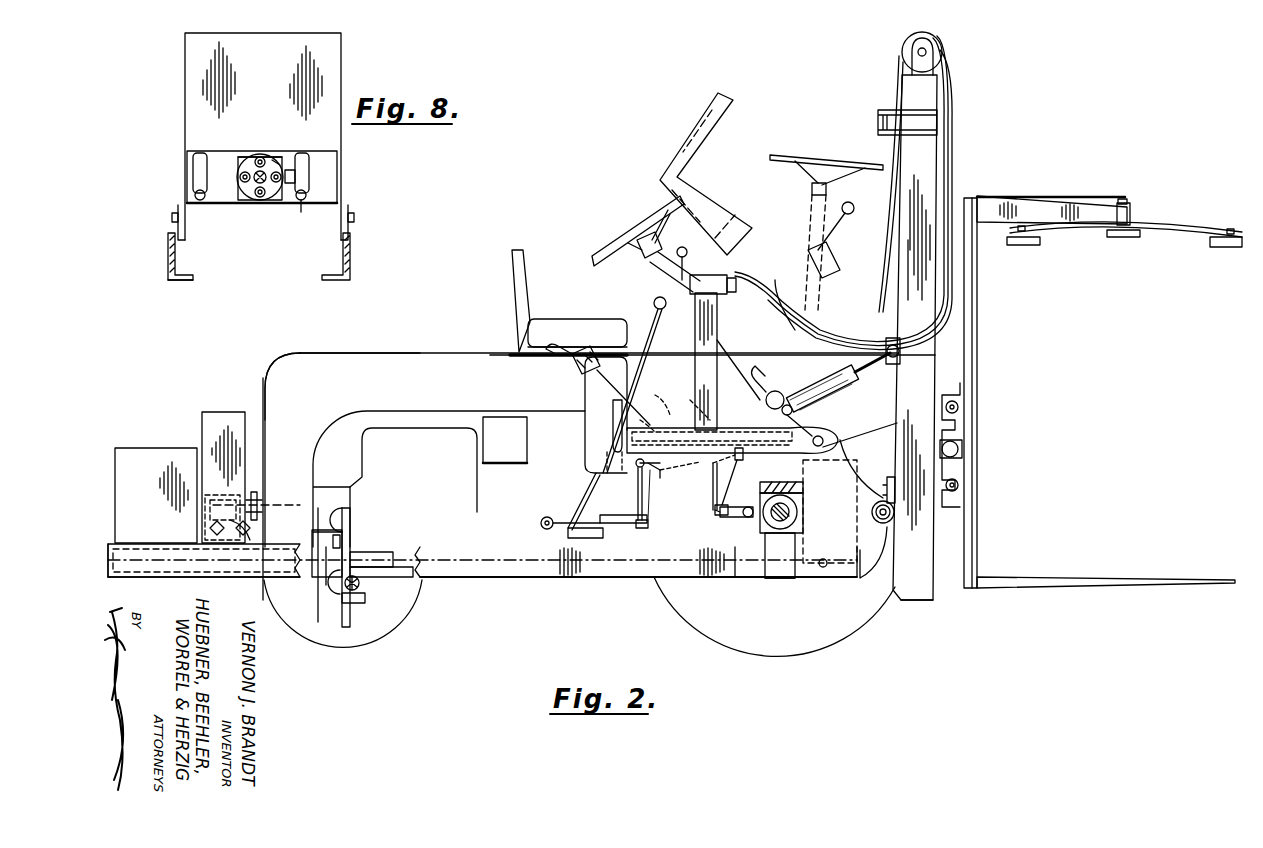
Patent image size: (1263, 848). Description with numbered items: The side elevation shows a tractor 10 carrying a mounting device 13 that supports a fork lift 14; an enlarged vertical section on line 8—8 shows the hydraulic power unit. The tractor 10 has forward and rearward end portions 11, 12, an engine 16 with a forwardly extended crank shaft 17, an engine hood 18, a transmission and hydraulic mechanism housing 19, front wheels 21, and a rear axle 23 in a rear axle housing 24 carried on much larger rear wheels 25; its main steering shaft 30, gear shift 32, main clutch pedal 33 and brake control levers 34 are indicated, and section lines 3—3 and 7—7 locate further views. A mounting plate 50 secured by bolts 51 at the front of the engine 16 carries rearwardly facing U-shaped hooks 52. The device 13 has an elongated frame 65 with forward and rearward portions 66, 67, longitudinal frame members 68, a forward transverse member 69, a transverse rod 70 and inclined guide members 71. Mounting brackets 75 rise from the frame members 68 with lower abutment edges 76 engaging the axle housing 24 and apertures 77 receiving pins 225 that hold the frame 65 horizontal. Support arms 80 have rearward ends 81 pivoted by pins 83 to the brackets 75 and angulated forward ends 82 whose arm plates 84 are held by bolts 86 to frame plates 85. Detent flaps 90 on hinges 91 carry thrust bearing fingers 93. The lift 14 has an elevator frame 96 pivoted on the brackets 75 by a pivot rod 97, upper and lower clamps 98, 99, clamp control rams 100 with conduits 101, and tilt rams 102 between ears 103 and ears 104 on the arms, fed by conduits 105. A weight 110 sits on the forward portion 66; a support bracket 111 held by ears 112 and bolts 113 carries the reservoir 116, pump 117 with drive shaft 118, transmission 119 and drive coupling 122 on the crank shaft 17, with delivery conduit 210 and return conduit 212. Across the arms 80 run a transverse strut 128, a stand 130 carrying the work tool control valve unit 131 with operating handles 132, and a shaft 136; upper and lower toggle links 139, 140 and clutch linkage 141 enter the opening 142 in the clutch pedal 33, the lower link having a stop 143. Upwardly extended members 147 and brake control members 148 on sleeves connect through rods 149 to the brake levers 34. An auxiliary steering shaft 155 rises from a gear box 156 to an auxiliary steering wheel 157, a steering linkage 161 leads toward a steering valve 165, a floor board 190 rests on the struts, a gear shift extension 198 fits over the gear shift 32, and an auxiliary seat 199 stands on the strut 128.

In FIG. 8, the reservoir 116 is at (282, 66).
In FIG. 2, the reservoir 116 is at (218, 412).
In FIG. 8, the support bracket 111 is at (342, 195).
In FIG. 8, the crank shaft 17 is at (262, 155).
In FIG. 2, the crank shaft 17 is at (272, 508).
In FIG. 8, the drive coupling 122 is at (246, 160).
In FIG. 8, the transmission 119 is at (275, 160).
In FIG. 8, the drive shaft 118 is at (291, 170).
In FIG. 8, the return conduit 212 is at (202, 200).
In FIG. 8, the delivery conduit 210 is at (302, 200).
In FIG. 8, the pump 117 is at (308, 185).
In FIG. 8, the ears 112 is at (180, 212).
In FIG. 2, the ears 112 is at (232, 542).
In FIG. 8, the bolts 113 is at (172, 217).
In FIG. 2, the bolts 113 is at (210, 530).
In FIG. 8, the longitudinal frame members 68 is at (168, 255).
In FIG. 2, the longitudinal frame members 68 is at (515, 578).
In FIG. 8, the frame 65 is at (166, 282).
In FIG. 2, the frame 65 is at (238, 598).
In FIG. 2, the engine hood 18 is at (420, 353).
In FIG. 2, the tractor 10 is at (400, 350).
In FIG. 2, the forward end portion 11 is at (290, 360).
In FIG. 2, the engine 16 is at (430, 462).
In FIG. 2, the section line 3— 3 is at (511, 335).
In FIG. 2, the main clutch pedal 33 is at (642, 562).
In FIG. 2, the transmission and hydraulic mechanism housing 19 is at (660, 540).
In FIG. 2, the forward portion 66 is at (150, 562).
In FIG. 2, the forward transverse member 69 is at (108, 577).
In FIG. 2, the weight 110 is at (133, 448).
In FIG. 2, the bolts 51 is at (344, 510).
In FIG. 2, the mounting plate 50 is at (338, 597).
In FIG. 2, the U-shaped hooks 52 is at (357, 605).
In FIG. 2, the transverse rod 70 is at (359, 586).
In FIG. 2, the section line 7— 7 is at (292, 520).
In FIG. 2, the guide members 71 is at (313, 575).
In FIG. 2, the section line 8— 8 is at (300, 405).
In FIG. 2, the front wheels 21 is at (400, 628).
In FIG. 2, the rear wheels 25 is at (791, 656).
In FIG. 2, the elevator frame 96 is at (930, 164).
In FIG. 2, the conduits 101 is at (955, 92).
In FIG. 2, the ears 103 is at (872, 318).
In FIG. 2, the tilt rams 102 is at (884, 345).
In FIG. 2, the ears 104 is at (828, 408).
In FIG. 2, the fork lift 14 is at (990, 185).
In FIG. 2, the lower clamp 99 is at (1162, 226).
In FIG. 2, the upper clamp 98 is at (1056, 580).
In FIG. 2, the hydraulic clamp control rams 100 is at (966, 424).
In FIG. 2, the pivot rod 97 is at (894, 520).
In FIG. 2, the mounting brackets 75 is at (868, 530).
In FIG. 2, the mounting device 13 is at (900, 600).
In FIG. 2, the auxiliary seat 199 is at (522, 268).
In FIG. 2, the gear shift extension 198 is at (640, 327).
In FIG. 2, the auxiliary steering wheel 157 is at (638, 228).
In FIG. 2, the auxiliary steering shaft 155 is at (660, 283).
In FIG. 2, the operating handles 132 is at (686, 248).
In FIG. 2, the work tool control valve unit 131 is at (782, 218).
In FIG. 2, the conduits 105 is at (760, 300).
In FIG. 2, the support arms 80 is at (712, 380).
In FIG. 2, the gear box 156 is at (740, 355).
In FIG. 2, the stand 130 is at (658, 310).
In FIG. 2, the floor board 190 is at (602, 370).
In FIG. 2, the main steering shaft 30 is at (572, 362).
In FIG. 2, the transverse strut 128 is at (620, 412).
In FIG. 2, the gear shift 32 is at (612, 437).
In FIG. 2, the pins 83 is at (832, 437).
In FIG. 2, the rearward ends 81 is at (822, 426).
In FIG. 2, the linkage rod 147 is at (705, 375).
In FIG. 2, the brake control members 148 is at (705, 398).
In FIG. 2, the elongated shaft 136 is at (664, 396).
In FIG. 2, the steering valve 165 is at (646, 414).
In FIG. 2, the upper toggle link 139 is at (636, 462).
In FIG. 2, the lower toggle link 140 is at (634, 478).
In FIG. 2, the forward ends 82 is at (612, 512).
In FIG. 2, the arm plates 84 is at (580, 527).
In FIG. 2, the bolts 86 is at (555, 520).
In FIG. 2, the frame plates 85 is at (560, 533).
In FIG. 2, the clutch linkage 141 is at (666, 477).
In FIG. 2, the opening 142 is at (689, 470).
In FIG. 2, the stop 143 is at (652, 512).
In FIG. 2, the steering linkage 161 is at (708, 508).
In FIG. 2, the brake control levers 34 is at (702, 524).
In FIG. 2, the rear axle housing 24 is at (745, 520).
In FIG. 2, the elongated rods 149 is at (713, 480).
In FIG. 2, the hinges 91 is at (733, 461).
In FIG. 2, the detent flaps 90 is at (733, 482).
In FIG. 2, the thrust bearing fingers 93 is at (729, 502).
In FIG. 2, the apertures 77 is at (812, 502).
In FIG. 2, the rear axle 23 is at (785, 530).
In FIG. 2, the lower abutment edges 76 is at (770, 578).
In FIG. 2, the rearward portion 67 is at (760, 580).
In FIG. 2, the rearward end portion 12 is at (737, 548).
In FIG. 2, the pins 225 is at (872, 582).